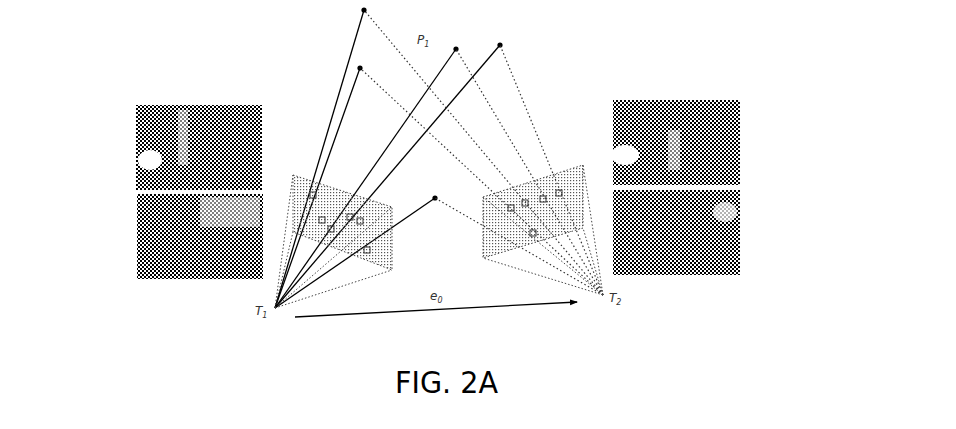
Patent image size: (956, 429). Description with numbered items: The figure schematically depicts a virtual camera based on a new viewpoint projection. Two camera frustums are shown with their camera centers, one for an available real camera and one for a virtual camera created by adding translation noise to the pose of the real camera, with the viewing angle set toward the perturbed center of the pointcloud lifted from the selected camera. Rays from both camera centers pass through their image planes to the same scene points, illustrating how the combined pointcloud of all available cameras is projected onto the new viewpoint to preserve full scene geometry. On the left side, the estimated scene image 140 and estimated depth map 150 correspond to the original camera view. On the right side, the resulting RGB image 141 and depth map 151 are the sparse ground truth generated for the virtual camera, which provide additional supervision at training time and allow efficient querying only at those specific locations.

The estimated scene image 140 is at (135, 158).
The estimated depth map 150 is at (135, 240).
The RGB image 141 is at (741, 138).
The depth map 151 is at (741, 230).